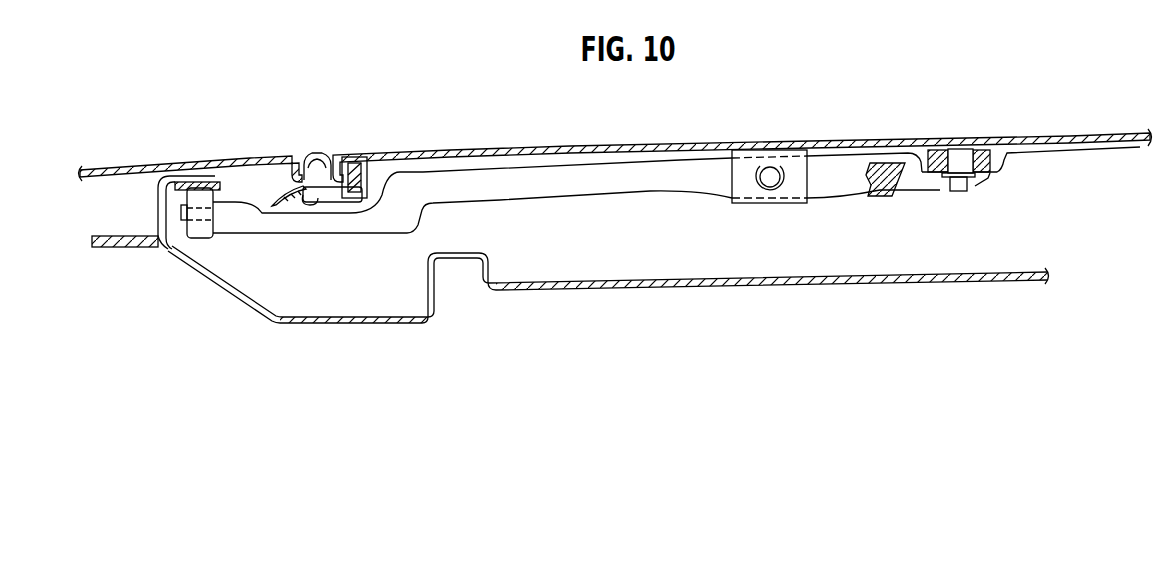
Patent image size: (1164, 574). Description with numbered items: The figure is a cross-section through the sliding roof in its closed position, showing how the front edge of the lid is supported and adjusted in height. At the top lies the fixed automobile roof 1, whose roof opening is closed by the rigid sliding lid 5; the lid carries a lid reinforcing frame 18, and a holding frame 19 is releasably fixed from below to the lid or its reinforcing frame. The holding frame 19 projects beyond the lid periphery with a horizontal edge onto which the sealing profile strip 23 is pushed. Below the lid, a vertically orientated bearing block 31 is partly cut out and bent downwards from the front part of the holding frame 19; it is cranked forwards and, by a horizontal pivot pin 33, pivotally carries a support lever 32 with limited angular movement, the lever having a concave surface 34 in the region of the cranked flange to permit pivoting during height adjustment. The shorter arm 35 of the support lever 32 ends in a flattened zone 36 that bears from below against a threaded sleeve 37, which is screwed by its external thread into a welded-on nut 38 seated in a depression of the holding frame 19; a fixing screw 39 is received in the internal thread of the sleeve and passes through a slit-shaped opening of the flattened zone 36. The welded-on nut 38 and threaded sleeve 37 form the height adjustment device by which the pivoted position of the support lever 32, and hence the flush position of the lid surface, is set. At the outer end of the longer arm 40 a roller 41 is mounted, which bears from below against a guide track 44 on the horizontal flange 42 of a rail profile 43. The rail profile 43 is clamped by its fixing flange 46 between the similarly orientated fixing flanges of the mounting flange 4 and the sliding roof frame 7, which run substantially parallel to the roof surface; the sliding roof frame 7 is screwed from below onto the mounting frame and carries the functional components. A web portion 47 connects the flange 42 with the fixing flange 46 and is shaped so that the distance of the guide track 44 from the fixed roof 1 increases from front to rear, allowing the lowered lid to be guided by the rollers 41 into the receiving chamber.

The fixed automobile roof 1 is at (123, 169).
The mounting flange 4 is at (157, 176).
The sliding lid 5 is at (462, 148).
The sliding roof frame 7 is at (254, 304).
The lid reinforcing frame 18 is at (642, 145).
The holding frame 19 is at (565, 160).
The sealing profile strip 23 is at (320, 154).
The bearing block 31 is at (808, 180).
The support lever 32 is at (617, 196).
The pivot pin 33 is at (771, 182).
The concave surface 34 is at (732, 203).
The arm 35 is at (860, 188).
The flattened zone 36 is at (987, 180).
The threaded sleeve 37 is at (960, 152).
The welded-on nut 38 is at (983, 152).
The fixing screw 39 is at (960, 192).
The arm 40 is at (480, 199).
The roller 41 is at (213, 236).
The flange 42 is at (216, 181).
The rail profile 43 is at (172, 242).
The guide track 44 is at (173, 198).
The fixing flange 46 is at (123, 249).
The web portion 47 is at (166, 223).